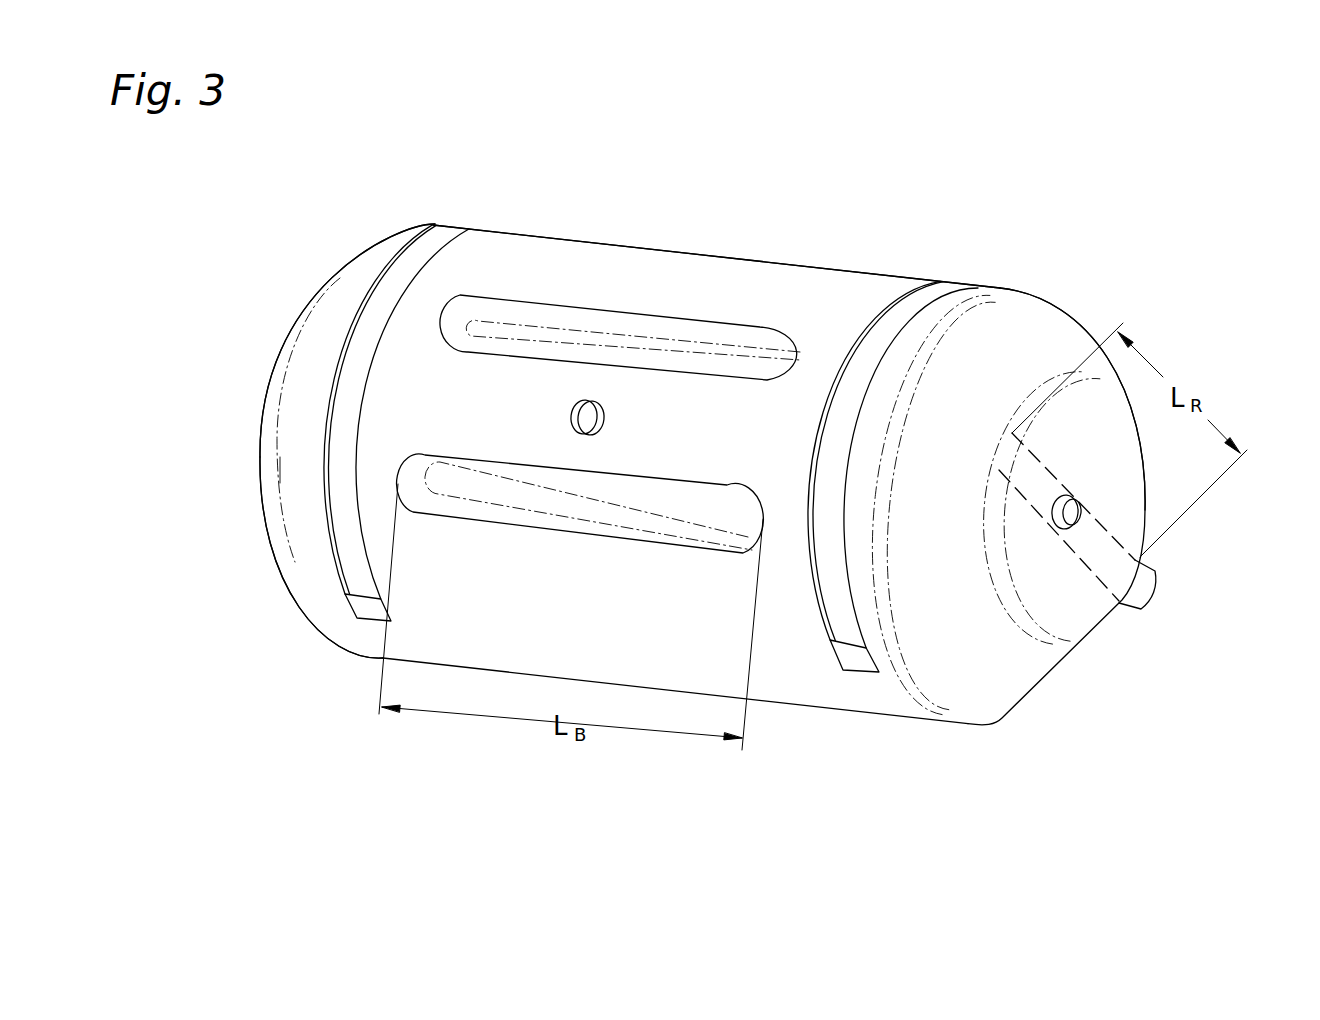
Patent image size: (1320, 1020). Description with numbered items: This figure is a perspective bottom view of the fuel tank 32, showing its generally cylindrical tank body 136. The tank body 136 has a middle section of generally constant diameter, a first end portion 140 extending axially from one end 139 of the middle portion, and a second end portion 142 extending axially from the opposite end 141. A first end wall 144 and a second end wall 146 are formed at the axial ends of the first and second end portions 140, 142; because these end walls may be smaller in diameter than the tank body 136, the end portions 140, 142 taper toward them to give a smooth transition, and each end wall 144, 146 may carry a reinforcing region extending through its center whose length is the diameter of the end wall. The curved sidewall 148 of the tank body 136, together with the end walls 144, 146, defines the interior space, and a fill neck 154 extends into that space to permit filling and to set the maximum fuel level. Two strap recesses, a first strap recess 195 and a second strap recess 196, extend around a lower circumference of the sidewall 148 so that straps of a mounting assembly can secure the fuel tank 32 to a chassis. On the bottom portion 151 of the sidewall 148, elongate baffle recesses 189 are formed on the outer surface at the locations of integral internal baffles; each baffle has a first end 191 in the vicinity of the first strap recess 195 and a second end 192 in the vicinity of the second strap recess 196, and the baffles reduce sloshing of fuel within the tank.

The fuel tank 32 is at (1190, 148).
The tank body 136 is at (502, 196).
The end of the middle portion 139 is at (1047, 293).
The first end portion 140 is at (1085, 325).
The end of the middle portion 141 is at (380, 243).
The second end portion 142 is at (267, 497).
The first end wall 144 is at (1078, 613).
The second end wall 146 is at (268, 382).
The curved sidewall 148 is at (622, 255).
The bottom portion of the sidewall 151 is at (403, 387).
The fill neck 154 is at (1134, 607).
The baffle recess 189 is at (680, 358).
The first end of the baffle 191 is at (763, 519).
The second end of the baffle 192 is at (399, 484).
The first strap recess 195 is at (830, 653).
The second strap recess 196 is at (363, 583).